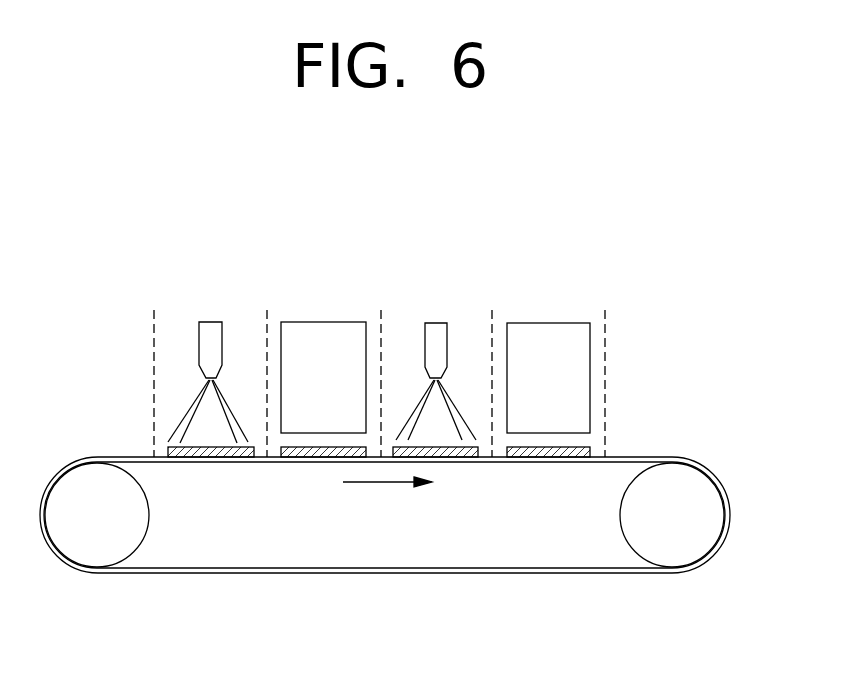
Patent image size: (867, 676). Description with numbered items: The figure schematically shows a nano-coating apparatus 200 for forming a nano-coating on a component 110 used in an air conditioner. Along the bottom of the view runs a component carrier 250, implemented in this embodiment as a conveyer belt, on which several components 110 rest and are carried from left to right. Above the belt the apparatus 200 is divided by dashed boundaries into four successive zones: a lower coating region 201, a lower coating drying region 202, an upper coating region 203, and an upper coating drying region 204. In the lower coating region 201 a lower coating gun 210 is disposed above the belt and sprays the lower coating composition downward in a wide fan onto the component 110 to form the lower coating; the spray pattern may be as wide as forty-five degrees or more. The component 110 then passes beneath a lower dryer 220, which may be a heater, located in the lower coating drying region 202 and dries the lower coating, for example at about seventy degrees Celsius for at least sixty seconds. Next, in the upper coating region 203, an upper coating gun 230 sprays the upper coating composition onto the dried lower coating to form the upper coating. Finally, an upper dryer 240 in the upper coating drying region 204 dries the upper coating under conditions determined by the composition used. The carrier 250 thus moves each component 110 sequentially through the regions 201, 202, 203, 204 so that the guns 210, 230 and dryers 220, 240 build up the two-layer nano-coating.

The component used in the air conditioner 110 is at (167, 452).
The nano-coating apparatus 200 is at (615, 285).
The lower coating region 201 is at (170, 332).
The lower coating drying region 202 is at (276, 332).
The upper coating region 203 is at (392, 332).
The upper coating drying region 204 is at (502, 332).
The lower coating gun 210 is at (208, 322).
The lower dryer 220 is at (323, 322).
The upper coating gun 230 is at (434, 323).
The upper dryer 240 is at (546, 323).
The component carrier 250 is at (550, 574).